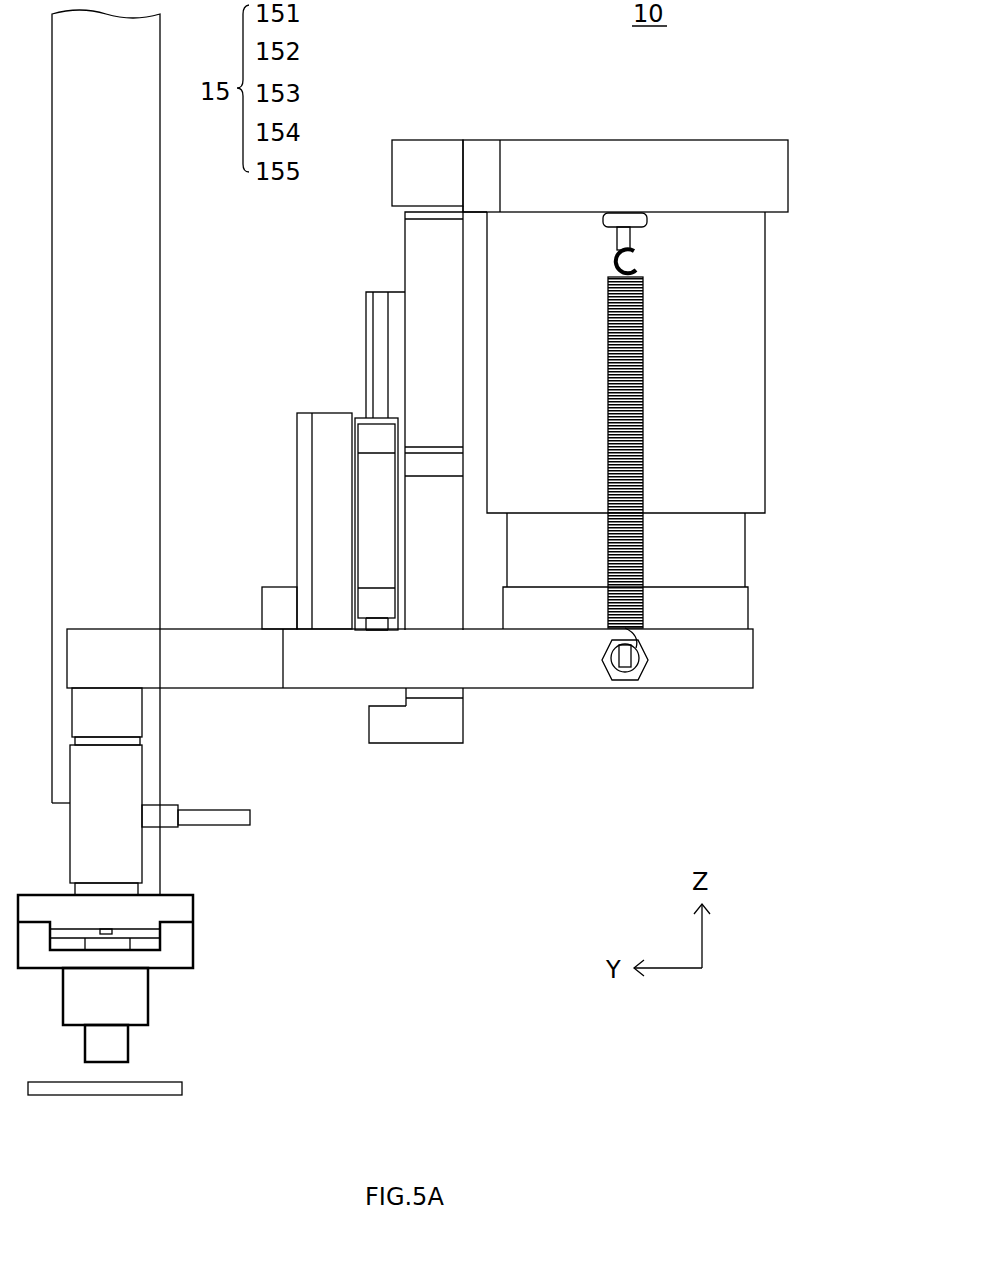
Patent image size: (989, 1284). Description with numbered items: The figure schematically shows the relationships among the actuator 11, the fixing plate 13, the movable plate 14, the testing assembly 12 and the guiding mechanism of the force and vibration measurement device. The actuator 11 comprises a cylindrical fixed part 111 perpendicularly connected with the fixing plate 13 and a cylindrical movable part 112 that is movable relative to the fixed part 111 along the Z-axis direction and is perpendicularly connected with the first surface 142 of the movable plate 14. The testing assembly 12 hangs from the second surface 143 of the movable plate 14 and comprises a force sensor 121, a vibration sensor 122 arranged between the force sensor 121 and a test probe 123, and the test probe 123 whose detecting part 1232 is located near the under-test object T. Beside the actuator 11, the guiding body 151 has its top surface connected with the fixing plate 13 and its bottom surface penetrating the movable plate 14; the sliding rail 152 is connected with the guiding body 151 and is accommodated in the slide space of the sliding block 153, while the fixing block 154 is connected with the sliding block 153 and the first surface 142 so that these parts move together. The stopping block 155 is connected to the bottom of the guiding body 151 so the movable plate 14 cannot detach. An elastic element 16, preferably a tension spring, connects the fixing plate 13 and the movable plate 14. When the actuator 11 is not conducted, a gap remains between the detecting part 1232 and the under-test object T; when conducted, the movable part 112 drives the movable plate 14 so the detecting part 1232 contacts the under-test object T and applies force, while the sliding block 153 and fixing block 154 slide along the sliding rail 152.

The actuator 11 is at (688, 420).
The fixed part 111 is at (745, 387).
The movable part 112 is at (740, 553).
The testing assembly 12 is at (166, 875).
The force sensor 121 is at (105, 782).
The vibration sensor 122 is at (173, 910).
The test probe 123 is at (162, 1013).
The detecting part 1232 is at (115, 1045).
The fixing plate 13 is at (697, 155).
The movable plate 14 is at (697, 675).
The first surface 142 is at (180, 627).
The second surface 143 is at (200, 688).
The guiding body 151 is at (423, 275).
The sliding rail 152 is at (371, 350).
The sliding block 153 is at (367, 430).
The fixing block 154 is at (302, 495).
The stopping block 155 is at (452, 724).
The elastic element 16 is at (643, 332).
The under-test object T is at (65, 1085).